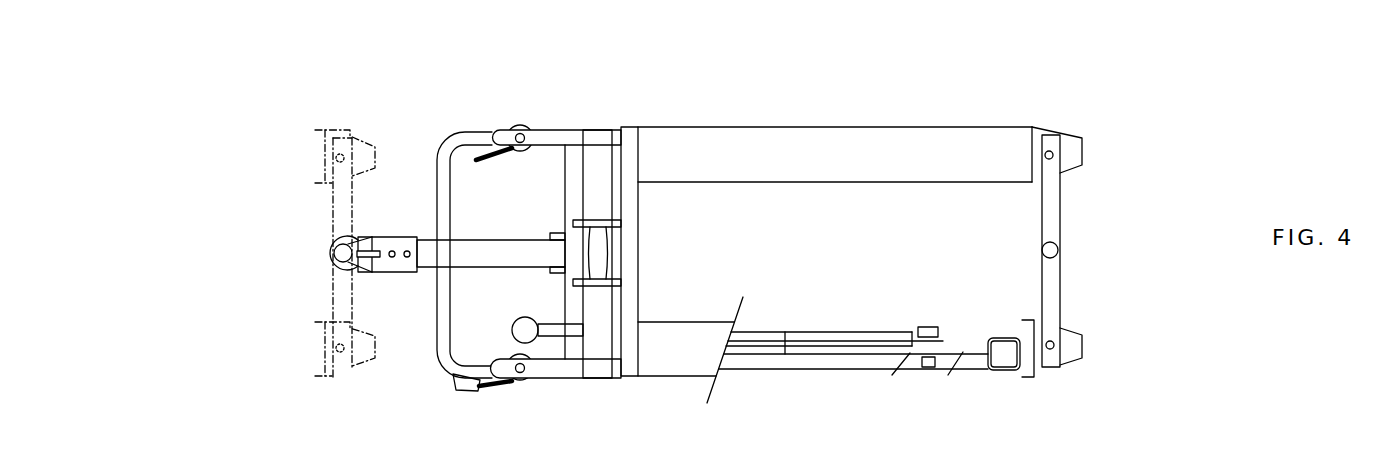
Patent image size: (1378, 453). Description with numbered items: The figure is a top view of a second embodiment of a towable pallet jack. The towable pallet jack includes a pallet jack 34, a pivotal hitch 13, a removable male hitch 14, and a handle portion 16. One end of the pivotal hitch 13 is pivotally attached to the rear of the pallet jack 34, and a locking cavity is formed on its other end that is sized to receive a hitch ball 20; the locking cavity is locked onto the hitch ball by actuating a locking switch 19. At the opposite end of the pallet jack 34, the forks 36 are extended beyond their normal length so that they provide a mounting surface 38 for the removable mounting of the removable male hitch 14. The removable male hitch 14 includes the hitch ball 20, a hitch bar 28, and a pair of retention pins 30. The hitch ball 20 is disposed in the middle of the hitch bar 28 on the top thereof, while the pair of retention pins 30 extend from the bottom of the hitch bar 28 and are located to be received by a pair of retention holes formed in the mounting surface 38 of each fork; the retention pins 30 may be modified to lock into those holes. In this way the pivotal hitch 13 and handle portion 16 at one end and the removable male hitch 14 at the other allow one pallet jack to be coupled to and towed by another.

The pivotal hitch 13 is at (493, 239).
The removable male hitch 14 is at (345, 211).
The handle portion 16 is at (462, 130).
The locking switch 19 is at (345, 267).
The hitch ball 20 is at (1057, 250).
The hitch bar 28 is at (1055, 308).
The retention pins 30 is at (1052, 348).
The pallet jack 34 is at (849, 223).
The forks 36 is at (988, 140).
The mounting surface 38 is at (361, 151).